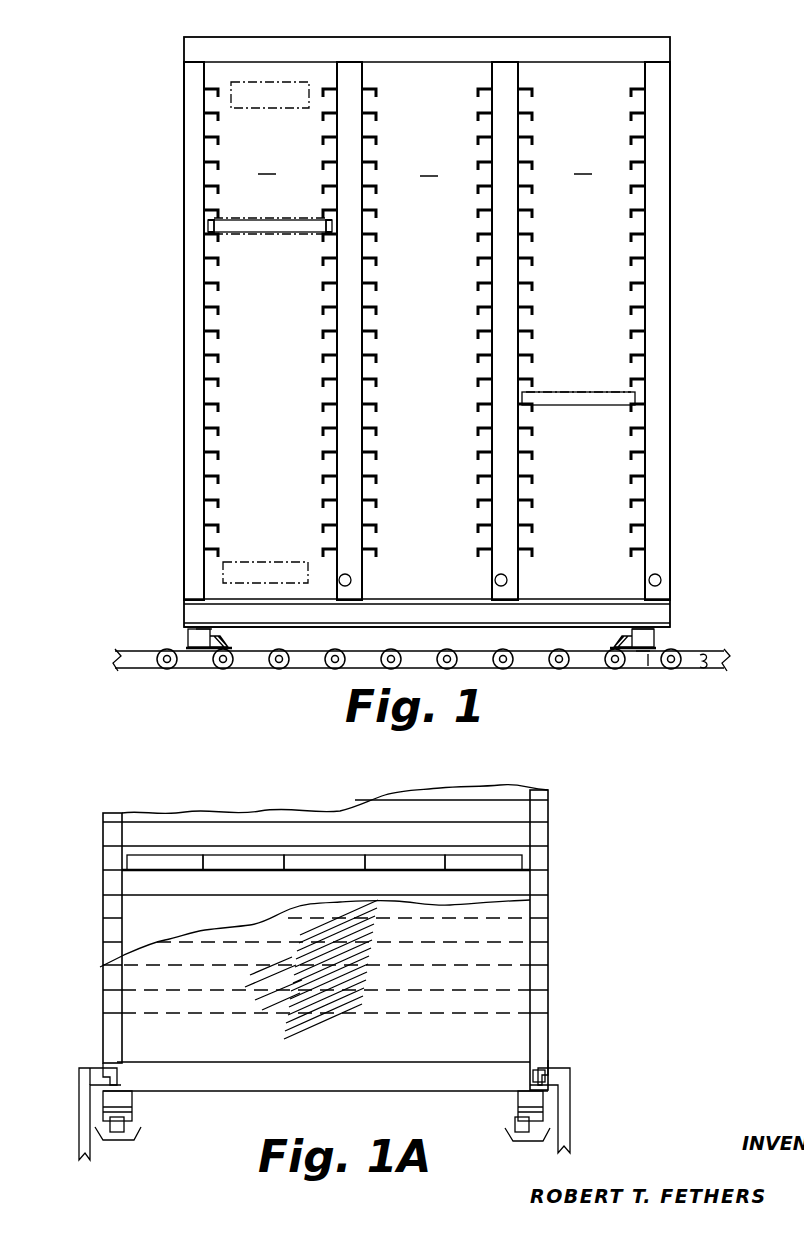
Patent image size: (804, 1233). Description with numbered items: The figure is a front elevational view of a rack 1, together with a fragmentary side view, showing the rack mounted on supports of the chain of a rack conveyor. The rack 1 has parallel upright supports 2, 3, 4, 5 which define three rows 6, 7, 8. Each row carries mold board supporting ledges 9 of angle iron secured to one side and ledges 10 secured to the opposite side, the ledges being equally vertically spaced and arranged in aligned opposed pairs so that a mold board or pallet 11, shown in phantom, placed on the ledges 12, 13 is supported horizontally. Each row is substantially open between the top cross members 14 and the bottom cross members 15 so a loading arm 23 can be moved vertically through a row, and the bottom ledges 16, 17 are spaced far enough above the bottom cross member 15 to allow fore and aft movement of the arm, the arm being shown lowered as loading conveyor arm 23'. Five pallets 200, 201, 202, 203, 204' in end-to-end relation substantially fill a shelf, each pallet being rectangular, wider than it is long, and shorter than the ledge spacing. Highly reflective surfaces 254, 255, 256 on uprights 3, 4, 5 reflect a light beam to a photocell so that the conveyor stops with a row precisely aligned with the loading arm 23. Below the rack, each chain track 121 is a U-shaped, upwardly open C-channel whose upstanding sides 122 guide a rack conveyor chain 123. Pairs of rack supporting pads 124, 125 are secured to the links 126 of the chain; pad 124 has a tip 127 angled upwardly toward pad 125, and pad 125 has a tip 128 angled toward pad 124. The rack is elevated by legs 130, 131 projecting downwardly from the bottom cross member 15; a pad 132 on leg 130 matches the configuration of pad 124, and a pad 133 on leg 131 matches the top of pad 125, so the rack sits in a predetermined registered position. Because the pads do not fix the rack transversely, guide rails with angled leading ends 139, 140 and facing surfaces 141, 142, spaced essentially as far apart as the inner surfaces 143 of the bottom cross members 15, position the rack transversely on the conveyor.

In FIG. 1, the rack 1 is at (676, 363).
In FIG. 1A, the rack 1 is at (549, 851).
In FIG. 1, the upright support 2 is at (186, 308).
In FIG. 1, the upright support 3 is at (338, 342).
In FIG. 1, the upright support 4 is at (493, 342).
In FIG. 1, the upright support 5 is at (668, 300).
In FIG. 1, the row 6 is at (270, 298).
In FIG. 1, the row 7 is at (427, 323).
In FIG. 1, the row 8 is at (581, 323).
In FIG. 1, the ledge 9 is at (205, 410).
In FIG. 1, the ledge 10 is at (337, 408).
In FIG. 1, the mold board or pallet 11 is at (270, 257).
In FIG. 1, the ledge 12 is at (218, 235).
In FIG. 1, the ledge 13 is at (322, 235).
In FIG. 1, the top cross member 14 is at (441, 47).
In FIG. 1, the bottom cross member 15 is at (672, 620).
In FIG. 1A, the bottom cross member 15 is at (124, 1066).
In FIG. 1, the bottom ledge 16 is at (208, 547).
In FIG. 1, the bottom ledge 17 is at (330, 547).
In FIG. 1, the loading arm 23 is at (276, 61).
In FIG. 1, the loading conveyor arm (lowered position) 23' is at (265, 560).
In FIG. 1, the pallet 200 is at (558, 405).
In FIG. 1A, the pallet 200 is at (166, 867).
In FIG. 1A, the pallet 201 is at (244, 867).
In FIG. 1A, the pallet 202 is at (324, 867).
In FIG. 1A, the pallet 203 is at (398, 867).
In FIG. 1A, the pallet 204' is at (483, 877).
In FIG. 1, the highly reflective surface 254 is at (351, 579).
In FIG. 1, the highly reflective surface 255 is at (507, 579).
In FIG. 1, the highly reflective surface 256 is at (661, 581).
In FIG. 1, the rack supporting pad 124 is at (200, 669).
In FIG. 1A, the rack supporting pad 124 is at (130, 1113).
In FIG. 1, the rack supporting pad 125 is at (642, 656).
In FIG. 1, the link 126 is at (652, 663).
In FIG. 1, the tip 127 is at (226, 647).
In FIG. 1, the tip 128 is at (618, 646).
In FIG. 1, the leg 130 is at (190, 637).
In FIG. 1, the leg 131 is at (655, 638).
In FIG. 1, the pad 132 is at (212, 633).
In FIG. 1, the pad 133 is at (640, 629).
In FIG. 1A, the chain track 121 is at (118, 1143).
In FIG. 1A, the upstanding side 122 is at (142, 1136).
In FIG. 1A, the rack conveyor chain 123 is at (130, 1123).
In FIG. 1A, the angled leading end 139 is at (85, 1079).
In FIG. 1A, the angled leading end 140 is at (553, 1069).
In FIG. 1A, the facing surface 141 is at (122, 1079).
In FIG. 1A, the facing surface 142 is at (533, 1081).
In FIG. 1A, the inner surface 143 is at (108, 1068).